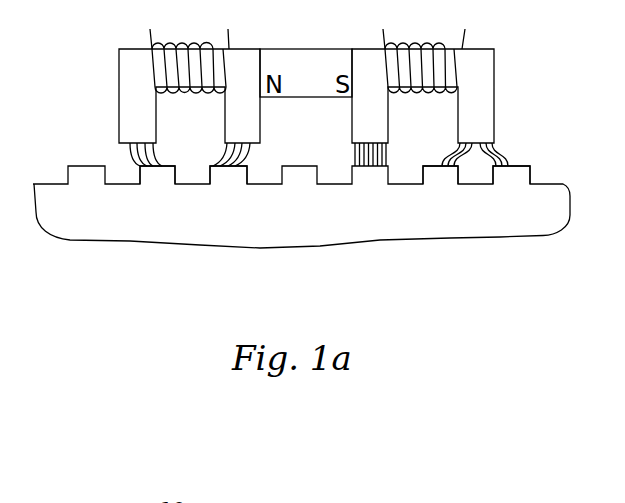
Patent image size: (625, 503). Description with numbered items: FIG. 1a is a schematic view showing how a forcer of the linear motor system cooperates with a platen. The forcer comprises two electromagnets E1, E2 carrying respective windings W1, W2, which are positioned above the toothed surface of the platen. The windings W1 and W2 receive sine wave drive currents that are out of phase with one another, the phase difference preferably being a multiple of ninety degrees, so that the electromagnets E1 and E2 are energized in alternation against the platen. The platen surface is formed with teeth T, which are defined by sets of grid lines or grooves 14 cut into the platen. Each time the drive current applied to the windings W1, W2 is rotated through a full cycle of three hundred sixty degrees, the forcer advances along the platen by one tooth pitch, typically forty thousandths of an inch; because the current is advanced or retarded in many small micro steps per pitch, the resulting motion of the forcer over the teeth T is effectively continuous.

The electromagnet E1 is at (495, 80).
The electromagnet E2 is at (119, 78).
The winding W1 is at (443, 91).
The winding W2 is at (210, 90).
The teeth T is at (370, 177).
The grid lines or grooves 14 is at (192, 177).